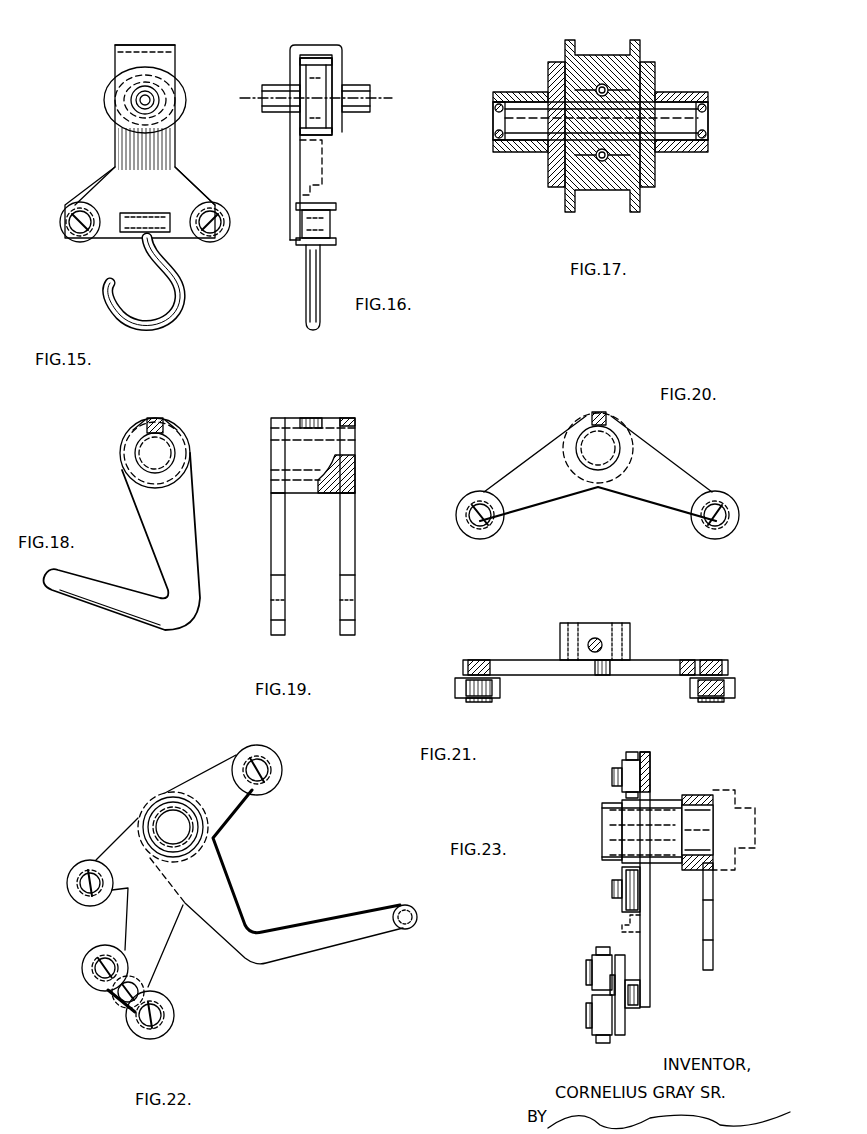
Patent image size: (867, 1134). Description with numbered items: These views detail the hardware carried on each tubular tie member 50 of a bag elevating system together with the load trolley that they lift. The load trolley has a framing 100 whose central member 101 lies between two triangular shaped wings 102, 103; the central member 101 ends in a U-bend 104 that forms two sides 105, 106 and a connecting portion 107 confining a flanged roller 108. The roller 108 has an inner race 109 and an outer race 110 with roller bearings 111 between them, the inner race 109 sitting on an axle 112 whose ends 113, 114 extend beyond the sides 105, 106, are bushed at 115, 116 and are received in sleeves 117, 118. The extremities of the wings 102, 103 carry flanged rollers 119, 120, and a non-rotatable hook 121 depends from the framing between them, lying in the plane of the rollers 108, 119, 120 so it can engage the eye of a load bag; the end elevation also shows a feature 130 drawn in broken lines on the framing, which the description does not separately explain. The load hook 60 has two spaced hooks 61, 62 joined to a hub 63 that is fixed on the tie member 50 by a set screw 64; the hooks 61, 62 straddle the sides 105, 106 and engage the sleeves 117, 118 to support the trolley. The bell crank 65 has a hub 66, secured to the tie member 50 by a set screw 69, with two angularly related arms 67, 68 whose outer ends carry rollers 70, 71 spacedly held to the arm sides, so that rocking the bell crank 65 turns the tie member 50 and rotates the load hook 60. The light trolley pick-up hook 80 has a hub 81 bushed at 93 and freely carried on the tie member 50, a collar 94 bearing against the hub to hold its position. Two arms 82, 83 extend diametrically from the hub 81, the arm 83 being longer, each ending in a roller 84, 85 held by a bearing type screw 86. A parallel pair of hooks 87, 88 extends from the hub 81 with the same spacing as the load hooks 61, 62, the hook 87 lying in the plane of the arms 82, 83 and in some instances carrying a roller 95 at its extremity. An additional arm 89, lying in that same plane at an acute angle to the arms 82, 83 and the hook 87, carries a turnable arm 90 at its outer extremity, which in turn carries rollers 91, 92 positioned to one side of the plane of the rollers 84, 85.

In FIG. 20, the tubular tie member 50 is at (614, 450).
In FIG. 22, the tubular tie member 50 is at (176, 840).
In FIG. 18, the load hook 60 is at (198, 508).
In FIG. 19, the load hook 60 is at (356, 514).
In FIG. 19, the hook 61 is at (283, 550).
In FIG. 18, the hook 62 is at (104, 606).
In FIG. 19, the hook 62 is at (350, 550).
In FIG. 18, the hub 63 is at (178, 427).
In FIG. 19, the hub 63 is at (330, 425).
In FIG. 18, the set screw 64 is at (154, 418).
In FIG. 19, the set screw 64 is at (312, 418).
In FIG. 20, the bell crank 65 is at (562, 507).
In FIG. 21, the bell crank 65 is at (612, 676).
In FIG. 20, the hub 66 is at (612, 422).
In FIG. 21, the hub 66 is at (633, 632).
In FIG. 20, the arm 67 is at (680, 472).
In FIG. 21, the arm 67 is at (668, 668).
In FIG. 20, the arm 68 is at (526, 470).
In FIG. 21, the arm 68 is at (524, 668).
In FIG. 20, the set screw 69 is at (592, 416).
In FIG. 21, the set screw 69 is at (594, 638).
In FIG. 20, the roller 70 is at (467, 534).
In FIG. 21, the roller 70 is at (500, 697).
In FIG. 20, the roller 71 is at (730, 530).
In FIG. 21, the roller 71 is at (735, 697).
In FIG. 22, the light trolley pick-up hook 80 is at (233, 875).
In FIG. 23, the light trolley pick-up hook 80 is at (718, 900).
In FIG. 22, the hub 81 is at (167, 796).
In FIG. 23, the hub 81 is at (668, 800).
In FIG. 22, the arm 82 is at (113, 846).
In FIG. 22, the arm 83 is at (218, 775).
In FIG. 23, the arm 83 is at (652, 760).
In FIG. 22, the roller 84 is at (70, 880).
In FIG. 23, the roller 84 is at (640, 888).
In FIG. 22, the roller 85 is at (283, 770).
In FIG. 23, the roller 85 is at (636, 752).
In FIG. 22, the bearing type screw 86 is at (266, 765).
In FIG. 23, the bearing type screw 86 is at (618, 762).
In FIG. 22, the hook 87 is at (310, 950).
In FIG. 23, the hook 87 is at (651, 926).
In FIG. 23, the hook 88 is at (716, 924).
In FIG. 22, the arm 89 is at (160, 948).
In FIG. 23, the arm 89 is at (642, 979).
In FIG. 22, the turnable arm 90 is at (110, 1005).
In FIG. 23, the turnable arm 90 is at (626, 1018).
In FIG. 22, the roller 91 is at (174, 1018).
In FIG. 23, the roller 91 is at (598, 1045).
In FIG. 22, the roller 92 is at (82, 964).
In FIG. 23, the roller 92 is at (600, 950).
In FIG. 22, the bushing 93 is at (192, 826).
In FIG. 23, the bushing 93 is at (697, 798).
In FIG. 23, the collar 94 is at (735, 790).
In FIG. 22, the roller 95 is at (414, 927).
In FIG. 23, the roller 95 is at (622, 930).
In FIG. 15, the framing 100 is at (114, 146).
In FIG. 16, the framing 100 is at (293, 152).
In FIG. 17, the framing 100 is at (553, 160).
In FIG. 15, the central member 101 is at (160, 152).
In FIG. 15, the wing 102 is at (188, 190).
In FIG. 15, the wing 103 is at (103, 188).
In FIG. 16, the wing 103 is at (293, 182).
In FIG. 15, the U-bend 104 is at (165, 46).
In FIG. 16, the U-bend 104 is at (318, 44).
In FIG. 16, the side 105 is at (293, 62).
In FIG. 15, the side 106 is at (166, 83).
In FIG. 16, the side 106 is at (343, 66).
In FIG. 17, the side 106 is at (648, 80).
In FIG. 16, the connecting portion 107 is at (308, 44).
In FIG. 15, the flanged roller 108 is at (110, 108).
In FIG. 16, the flanged roller 108 is at (335, 133).
In FIG. 17, the flanged roller 108 is at (638, 56).
In FIG. 17, the inner race 109 is at (628, 148).
In FIG. 17, the outer race 110 is at (630, 165).
In FIG. 17, the roller bearings 111 is at (602, 162).
In FIG. 17, the axle 112 is at (590, 126).
In FIG. 17, the axle end 113 is at (510, 122).
In FIG. 15, the axle end 114 is at (150, 100).
In FIG. 17, the axle end 114 is at (700, 126).
In FIG. 17, the bushing 115 is at (684, 100).
In FIG. 17, the bushing 116 is at (525, 95).
In FIG. 15, the sleeve 117 is at (136, 85).
In FIG. 16, the sleeve 117 is at (362, 114).
In FIG. 17, the sleeve 117 is at (692, 154).
In FIG. 16, the sleeve 118 is at (280, 116).
In FIG. 17, the sleeve 118 is at (508, 152).
In FIG. 15, the flanged roller 119 is at (224, 236).
In FIG. 15, the flanged roller 120 is at (62, 230).
In FIG. 16, the flanged roller 120 is at (320, 226).
In FIG. 15, the hook 121 is at (183, 303).
In FIG. 16, the hook 121 is at (305, 295).
In FIG. 16, the slot 130 is at (327, 172).